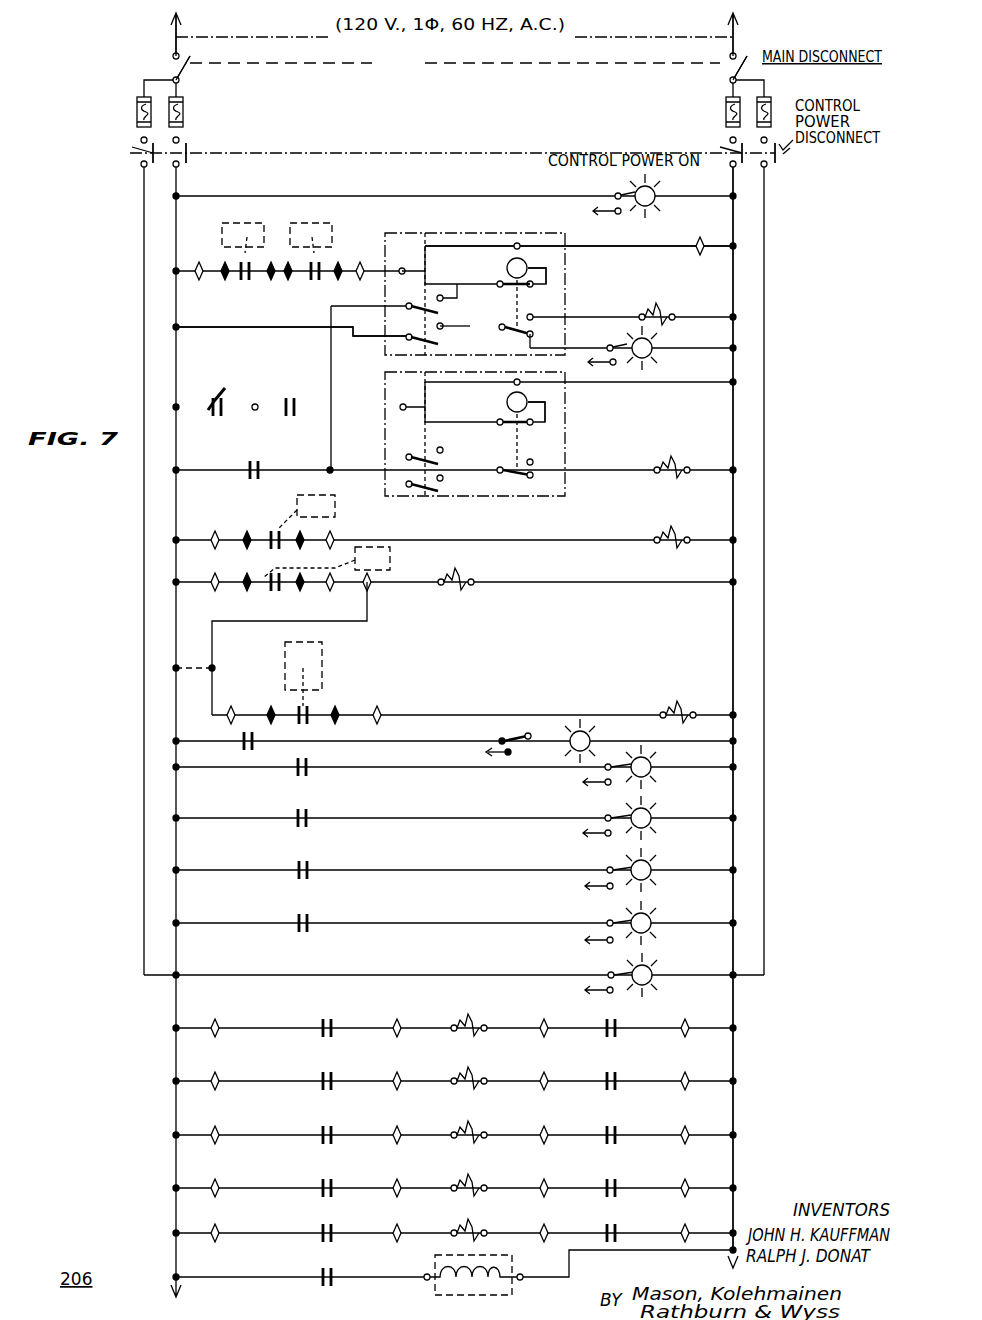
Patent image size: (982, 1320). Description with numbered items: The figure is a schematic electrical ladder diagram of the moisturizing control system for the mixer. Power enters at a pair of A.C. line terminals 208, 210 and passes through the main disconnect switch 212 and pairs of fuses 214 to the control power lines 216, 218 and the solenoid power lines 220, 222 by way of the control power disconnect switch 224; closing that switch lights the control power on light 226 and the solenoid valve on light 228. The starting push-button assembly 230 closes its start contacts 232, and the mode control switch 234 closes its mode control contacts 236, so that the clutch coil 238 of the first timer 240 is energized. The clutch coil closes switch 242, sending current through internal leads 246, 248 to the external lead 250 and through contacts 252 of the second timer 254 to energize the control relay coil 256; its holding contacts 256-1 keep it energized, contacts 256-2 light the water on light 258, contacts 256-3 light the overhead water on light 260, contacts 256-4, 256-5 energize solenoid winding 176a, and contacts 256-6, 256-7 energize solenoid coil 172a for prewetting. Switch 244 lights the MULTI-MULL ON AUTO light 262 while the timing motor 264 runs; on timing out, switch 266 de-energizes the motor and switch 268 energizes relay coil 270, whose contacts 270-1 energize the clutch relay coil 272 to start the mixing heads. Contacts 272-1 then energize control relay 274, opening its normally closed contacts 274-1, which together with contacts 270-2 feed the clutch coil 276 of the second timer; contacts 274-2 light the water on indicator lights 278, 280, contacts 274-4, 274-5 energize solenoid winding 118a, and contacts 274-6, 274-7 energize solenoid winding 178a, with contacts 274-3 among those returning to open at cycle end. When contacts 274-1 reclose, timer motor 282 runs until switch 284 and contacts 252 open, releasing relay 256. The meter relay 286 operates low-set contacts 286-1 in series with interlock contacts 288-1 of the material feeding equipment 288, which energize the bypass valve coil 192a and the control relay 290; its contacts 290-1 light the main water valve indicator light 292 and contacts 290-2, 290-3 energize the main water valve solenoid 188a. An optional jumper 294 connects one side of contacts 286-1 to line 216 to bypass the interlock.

The A.C. line terminal 208 is at (175, 45).
The A.C. line terminal 210 is at (738, 42).
The main disconnect switch 212 is at (376, 66).
The fuses 214 is at (193, 108).
The control power line 216 is at (178, 172).
The control power disconnect switch 224 is at (787, 156).
The control power line 218 is at (733, 220).
The solenoid power line 220 is at (134, 263).
The solenoid power line 222 is at (766, 287).
The control power on light 226 is at (657, 189).
The solenoid valve on light 228 is at (652, 982).
The starting push-button assembly 230 is at (325, 222).
The start contacts 232 is at (311, 283).
The mode control switch 234 is at (253, 222).
The mode control contacts 236 is at (241, 283).
The clutch coil 238 is at (475, 264).
The timer No. 1 240 is at (542, 242).
The timer switch 242 is at (448, 314).
The timer switch 244 is at (435, 347).
The internal lead 246 is at (455, 294).
The internal lead 248 is at (454, 298).
The external lead 250 is at (330, 346).
The timer contacts 252 is at (535, 460).
The timer No. 2 254 is at (551, 492).
The control relay coil 256 is at (676, 460).
The relay contacts 256-1 is at (248, 466).
The relay contacts 256-2 is at (286, 770).
The relay contacts 256-3 is at (286, 925).
The relay contacts 256-4 is at (320, 1080).
The relay contacts 256-5 is at (617, 1076).
The relay contacts 256-6 is at (320, 1230).
The relay contacts 256-7 is at (617, 1228).
The water on light 258 is at (651, 774).
The water on indicator light 260 is at (651, 930).
The MULTI-MULL ON AUTO light 262 is at (652, 356).
The timing motor 264 is at (546, 252).
The timer switch 266 is at (534, 300).
The timer switch 268 is at (540, 338).
The relay coil 270 is at (662, 306).
The relay contacts 270-1 is at (320, 1272).
The relay contacts 270-2 is at (296, 420).
The clutch relay coil 272 is at (322, 486).
The clutch relay contacts 272-1 is at (270, 532).
The control relay coil 274 is at (680, 522).
The normally closed relay contacts 274-1 is at (209, 386).
The relay contacts 274-2 is at (286, 822).
The relay contacts 274-3 is at (286, 872).
The relay contacts 274-4 is at (320, 1134).
The relay contacts 274-5 is at (617, 1130).
The relay contacts 274-6 is at (320, 1186).
The relay contacts 274-7 is at (617, 1183).
The clutch coil 276 is at (428, 402).
The water on indicator light 278 is at (651, 825).
The water on indicator light 280 is at (651, 877).
The timer motor 282 is at (530, 392).
The timer switch 284 is at (500, 430).
The meter relay 286 is at (284, 670).
The low-set contacts 286-1 is at (310, 708).
The material feeding equipment 288 is at (385, 563).
The interlock contacts 288-1 is at (271, 576).
The control relay 290 is at (670, 710).
The relay contacts 290-1 is at (242, 744).
The relay contacts 290-2 is at (320, 1026).
The relay contacts 290-3 is at (604, 1038).
The main water valve indicator light 292 is at (569, 743).
The jumper 294 is at (196, 668).
The bypass water valve solenoid coil 192a is at (480, 584).
The main water valve solenoid 188a is at (472, 1018).
The solenoid valve winding 176a is at (480, 1072).
The solenoid winding 118a is at (476, 1125).
The solenoid coil winding 178a is at (475, 1178).
The solenoid valve coil 172a is at (475, 1223).